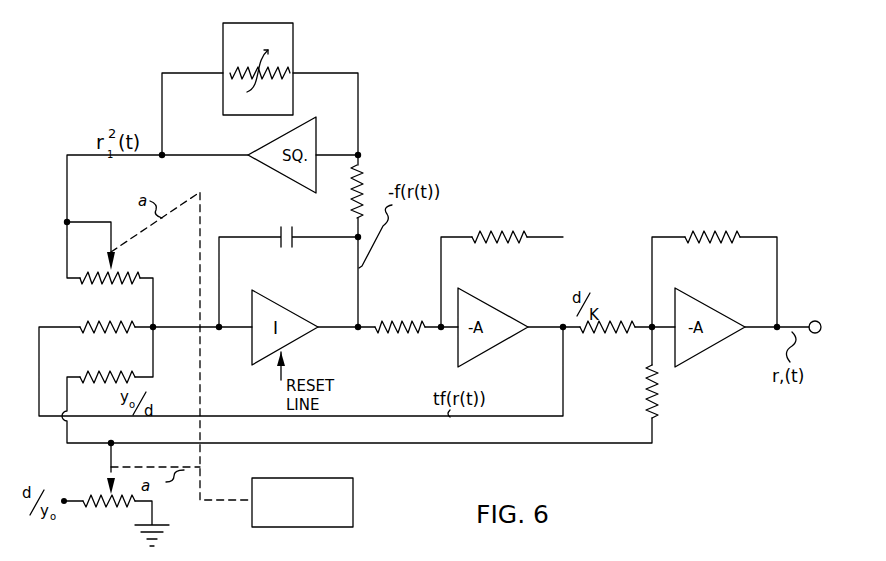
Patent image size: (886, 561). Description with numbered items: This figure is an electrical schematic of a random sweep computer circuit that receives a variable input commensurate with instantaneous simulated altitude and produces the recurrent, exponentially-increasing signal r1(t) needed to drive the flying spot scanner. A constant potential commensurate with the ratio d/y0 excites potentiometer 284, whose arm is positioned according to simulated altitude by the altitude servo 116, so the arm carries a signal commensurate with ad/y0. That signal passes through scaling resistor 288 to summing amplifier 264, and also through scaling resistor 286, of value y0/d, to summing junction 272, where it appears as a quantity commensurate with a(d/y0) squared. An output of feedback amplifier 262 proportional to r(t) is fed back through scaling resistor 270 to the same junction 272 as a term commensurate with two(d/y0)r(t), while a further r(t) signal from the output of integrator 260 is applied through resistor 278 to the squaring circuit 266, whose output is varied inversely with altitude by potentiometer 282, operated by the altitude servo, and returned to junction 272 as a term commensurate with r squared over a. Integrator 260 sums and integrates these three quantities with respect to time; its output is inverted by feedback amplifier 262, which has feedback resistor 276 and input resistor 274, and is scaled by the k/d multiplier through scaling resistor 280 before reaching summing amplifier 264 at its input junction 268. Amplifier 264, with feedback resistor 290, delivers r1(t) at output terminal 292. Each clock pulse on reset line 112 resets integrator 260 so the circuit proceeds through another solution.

The line 112 is at (279, 384).
The altitude servo 116 is at (356, 494).
The integrator 260 is at (276, 312).
The feedback amplifier 262 is at (500, 314).
The summing amplifier 264 is at (696, 312).
The squaring circuit 266 is at (304, 187).
The summing junction 268 is at (651, 323).
The scaling resistor 270 is at (88, 322).
The summing junction 272 is at (156, 329).
The resistor 274 is at (402, 333).
The feedback resistor 276 is at (482, 232).
The resistor 278 is at (364, 187).
The scaling resistor 280 is at (622, 334).
The potentiometer 282 is at (97, 284).
The potentiometer 284 is at (112, 506).
The scaling resistor 286 is at (120, 370).
The scaling resistor 288 is at (662, 398).
The feedback resistor 290 is at (701, 232).
The output terminal 292 is at (815, 321).